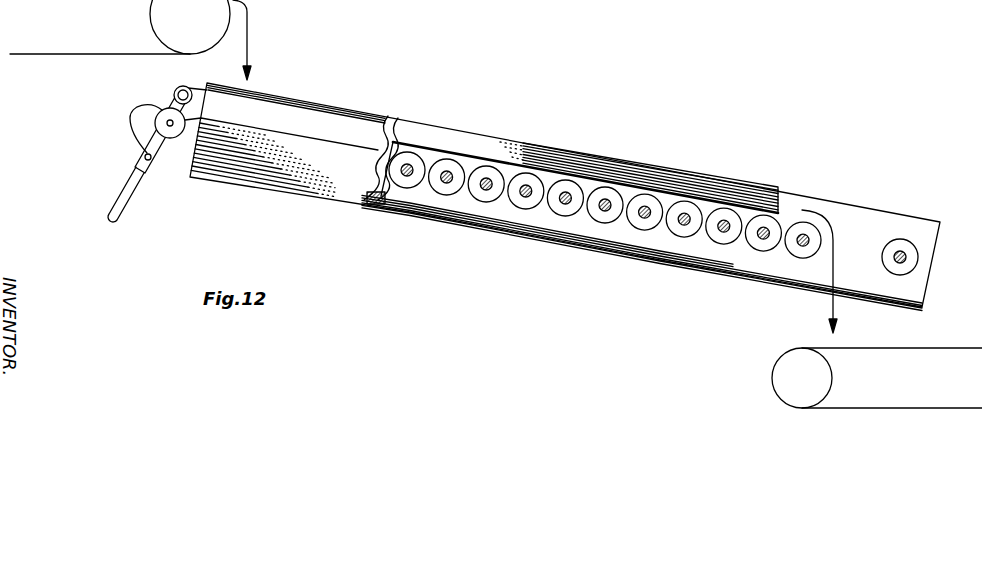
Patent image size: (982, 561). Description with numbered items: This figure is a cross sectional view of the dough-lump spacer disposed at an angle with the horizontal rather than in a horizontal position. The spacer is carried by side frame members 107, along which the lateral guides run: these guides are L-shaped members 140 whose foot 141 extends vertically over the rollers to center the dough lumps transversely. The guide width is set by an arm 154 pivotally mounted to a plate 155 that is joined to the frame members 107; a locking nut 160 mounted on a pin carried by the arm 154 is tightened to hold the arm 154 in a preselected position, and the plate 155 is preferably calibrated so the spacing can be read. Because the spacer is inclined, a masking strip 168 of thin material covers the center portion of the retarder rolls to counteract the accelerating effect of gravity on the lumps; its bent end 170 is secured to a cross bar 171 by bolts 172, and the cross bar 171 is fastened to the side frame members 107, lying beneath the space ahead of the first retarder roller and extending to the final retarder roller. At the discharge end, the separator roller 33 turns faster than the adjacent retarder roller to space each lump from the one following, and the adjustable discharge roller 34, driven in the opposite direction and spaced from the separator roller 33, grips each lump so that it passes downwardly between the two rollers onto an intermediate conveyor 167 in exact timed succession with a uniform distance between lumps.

The frame members 107 is at (857, 223).
The L-shaped members 140 is at (293, 96).
The foot 141 is at (697, 180).
The masking strip 168 is at (627, 188).
The bent end 170 is at (388, 140).
The cross bar 171 is at (372, 204).
The bolts 172 is at (398, 220).
The separator roller 33 is at (811, 254).
The discharge roller 34 is at (918, 252).
The arm 154 is at (127, 204).
The plate 155 is at (135, 133).
The locking nut 160 is at (167, 112).
The intermediate conveyor 167 is at (953, 348).